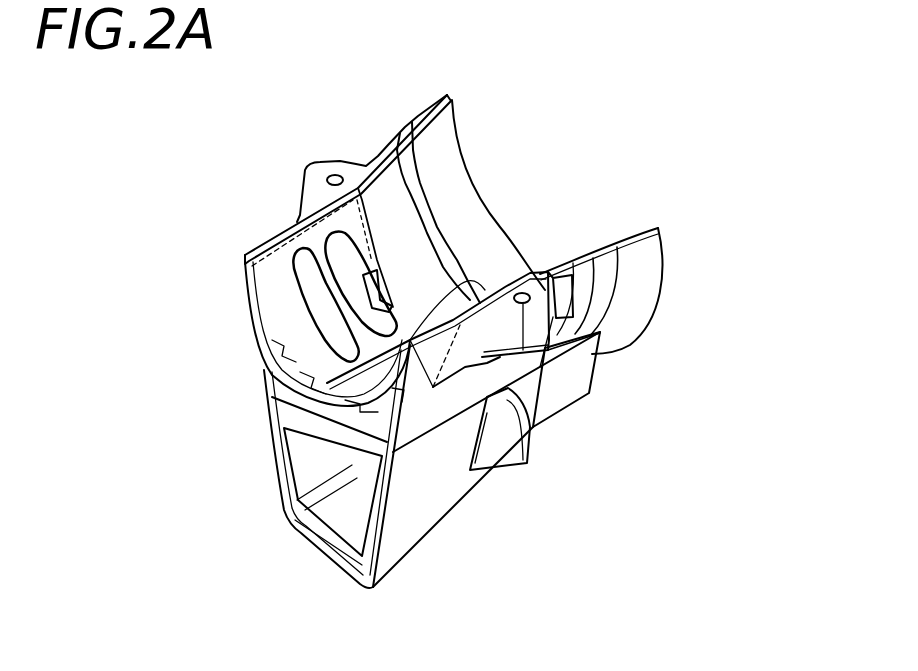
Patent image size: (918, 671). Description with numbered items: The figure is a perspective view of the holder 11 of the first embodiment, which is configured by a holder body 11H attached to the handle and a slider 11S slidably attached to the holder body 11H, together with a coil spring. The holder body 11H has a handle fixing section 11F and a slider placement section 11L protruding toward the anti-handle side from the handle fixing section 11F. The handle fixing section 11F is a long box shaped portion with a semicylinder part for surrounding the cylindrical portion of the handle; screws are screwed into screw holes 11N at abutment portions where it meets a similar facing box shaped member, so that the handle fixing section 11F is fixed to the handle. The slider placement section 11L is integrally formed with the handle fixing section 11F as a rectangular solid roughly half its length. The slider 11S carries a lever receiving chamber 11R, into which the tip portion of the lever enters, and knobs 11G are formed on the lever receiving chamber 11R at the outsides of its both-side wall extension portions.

The holder 11 is at (483, 176).
The screw holes 11N is at (335, 173).
The handle fixing section 11F is at (487, 245).
The holder body 11H is at (758, 143).
The slider placement section 11L is at (598, 353).
The knobs 11G is at (527, 462).
The lever receiving chamber 11R is at (325, 447).
The slider 11S is at (415, 542).